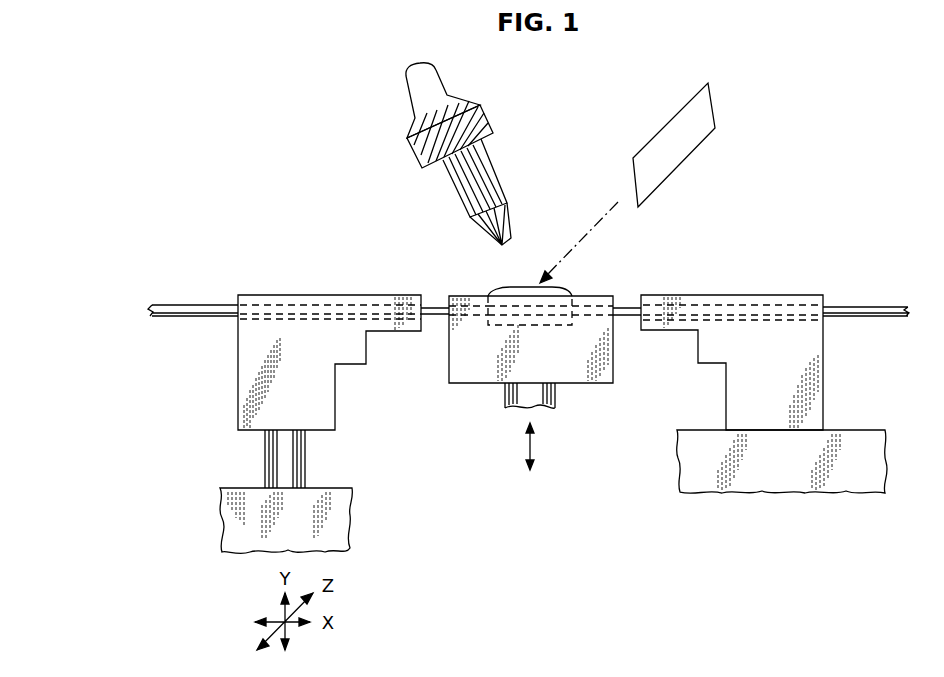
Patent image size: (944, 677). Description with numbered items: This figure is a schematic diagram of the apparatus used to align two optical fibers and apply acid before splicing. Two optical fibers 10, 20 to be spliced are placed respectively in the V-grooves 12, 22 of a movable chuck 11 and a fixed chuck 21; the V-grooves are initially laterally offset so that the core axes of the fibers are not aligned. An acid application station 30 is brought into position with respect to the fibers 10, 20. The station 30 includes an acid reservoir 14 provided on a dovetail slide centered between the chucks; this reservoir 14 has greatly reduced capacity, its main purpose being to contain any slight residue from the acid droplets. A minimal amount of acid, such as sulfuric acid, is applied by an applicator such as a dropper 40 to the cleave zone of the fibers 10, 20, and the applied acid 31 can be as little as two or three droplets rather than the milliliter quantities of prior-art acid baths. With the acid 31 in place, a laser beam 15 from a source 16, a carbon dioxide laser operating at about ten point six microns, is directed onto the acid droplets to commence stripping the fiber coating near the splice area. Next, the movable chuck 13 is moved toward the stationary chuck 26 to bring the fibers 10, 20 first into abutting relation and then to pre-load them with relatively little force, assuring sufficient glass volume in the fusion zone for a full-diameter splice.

The optical fiber 10 is at (200, 304).
The movable chuck 11 is at (287, 295).
The V-groove 12 is at (268, 320).
The movable chuck 13 is at (343, 517).
The acid reservoir 14 is at (558, 320).
The laser beam 15 is at (583, 238).
The laser source 16 is at (667, 126).
The optical fiber 20 is at (862, 306).
The fixed chuck 21 is at (775, 295).
The V-groove 22 is at (787, 318).
The stationary chuck 26 is at (775, 478).
The acid application station 30 is at (488, 384).
The applied acid 31 is at (500, 286).
The dropper 40 is at (461, 201).